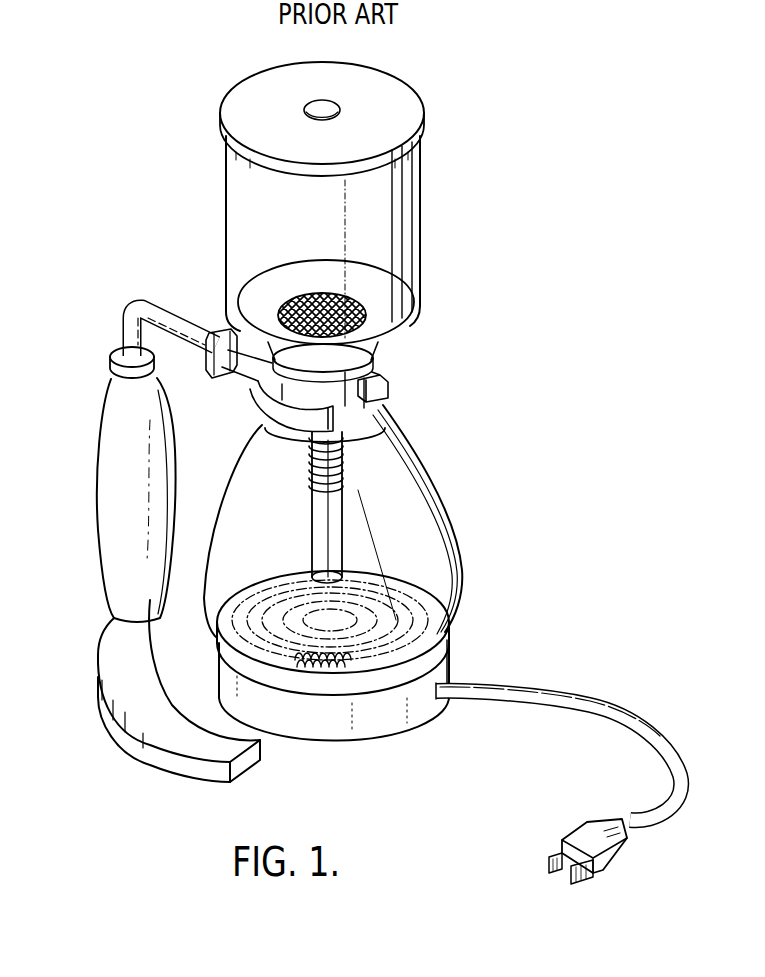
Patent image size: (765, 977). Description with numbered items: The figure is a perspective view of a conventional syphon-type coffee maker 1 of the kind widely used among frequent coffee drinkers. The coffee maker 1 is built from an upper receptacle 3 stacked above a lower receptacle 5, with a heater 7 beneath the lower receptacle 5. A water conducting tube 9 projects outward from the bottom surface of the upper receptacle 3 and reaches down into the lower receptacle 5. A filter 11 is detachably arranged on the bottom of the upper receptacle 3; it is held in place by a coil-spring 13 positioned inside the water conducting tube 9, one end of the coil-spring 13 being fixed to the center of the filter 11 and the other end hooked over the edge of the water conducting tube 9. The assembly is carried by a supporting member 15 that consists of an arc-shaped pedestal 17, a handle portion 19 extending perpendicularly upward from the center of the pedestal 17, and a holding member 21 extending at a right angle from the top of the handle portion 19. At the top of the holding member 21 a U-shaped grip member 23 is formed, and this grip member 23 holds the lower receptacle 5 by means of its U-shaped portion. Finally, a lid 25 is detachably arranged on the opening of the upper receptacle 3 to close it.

The syphon-type coffee maker 1 is at (452, 436).
The upper receptacle 3 is at (421, 228).
The lower receptacle 5 is at (450, 505).
The heater 7 is at (343, 725).
The water conducting tube 9 is at (348, 515).
The filter 11 is at (314, 293).
The coil-spring 13 is at (323, 497).
The supporting member 15 is at (95, 443).
The arc-shaped pedestal 17 is at (97, 651).
The handle portion 19 is at (95, 492).
The holding member 21 is at (222, 345).
The U-shaped grip member 23 is at (384, 382).
The lid 25 is at (402, 95).